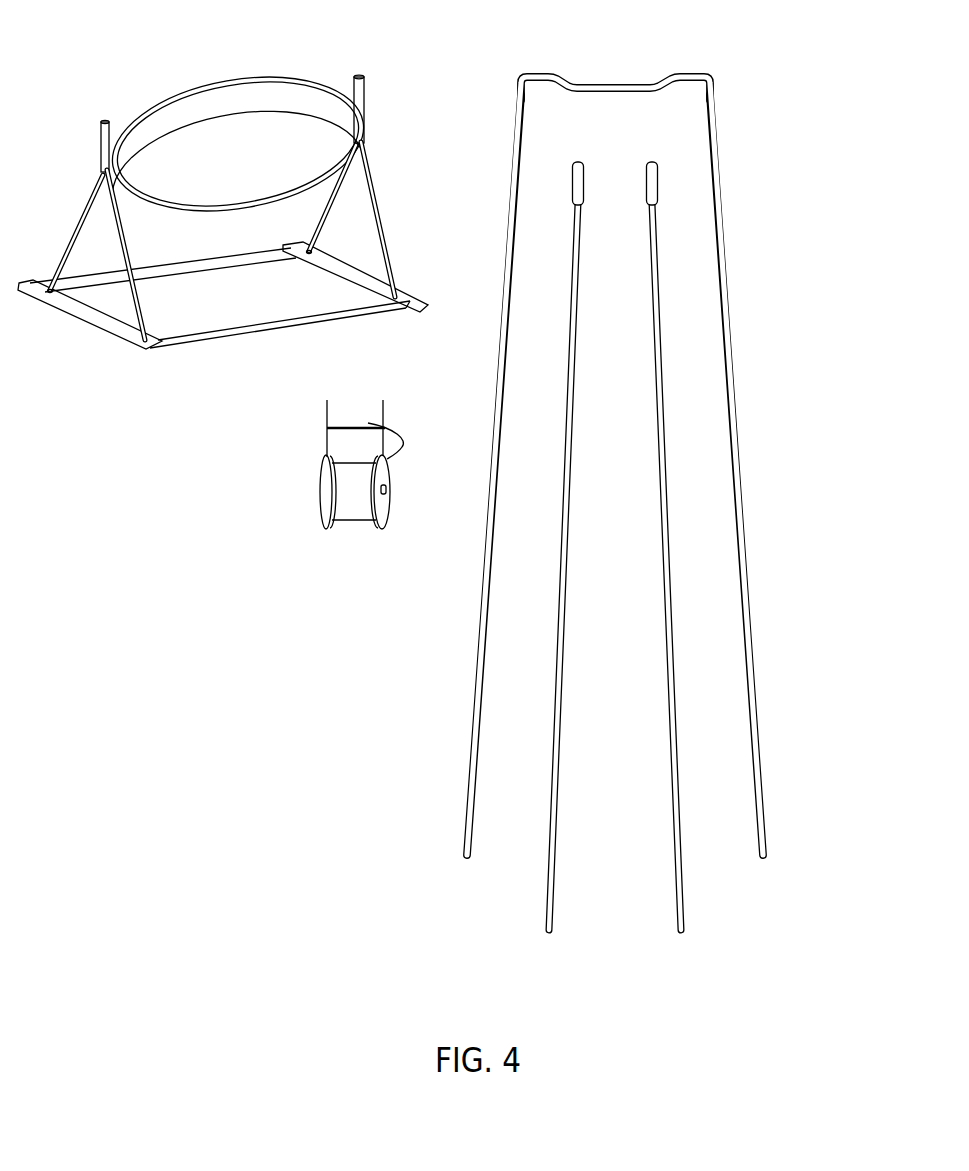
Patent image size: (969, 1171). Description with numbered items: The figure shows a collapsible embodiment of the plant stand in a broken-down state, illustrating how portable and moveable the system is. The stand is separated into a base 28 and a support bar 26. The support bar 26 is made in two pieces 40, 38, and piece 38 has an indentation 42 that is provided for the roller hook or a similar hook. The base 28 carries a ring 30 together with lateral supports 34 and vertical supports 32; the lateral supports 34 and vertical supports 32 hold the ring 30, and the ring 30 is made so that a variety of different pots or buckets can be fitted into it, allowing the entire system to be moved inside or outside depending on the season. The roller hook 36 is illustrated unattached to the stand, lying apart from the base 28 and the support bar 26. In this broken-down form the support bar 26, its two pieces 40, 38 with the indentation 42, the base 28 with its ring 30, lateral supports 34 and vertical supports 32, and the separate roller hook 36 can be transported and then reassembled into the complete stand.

The support bar 26 is at (611, 476).
The base 28 is at (223, 209).
The ring 30 is at (190, 70).
The vertical supports 32 is at (93, 330).
The lateral supports 34 is at (241, 333).
The roller hook 36 is at (296, 506).
The piece of the support bar 38 is at (467, 856).
The piece of the support bar 40 is at (554, 870).
The indentation 42 is at (606, 76).